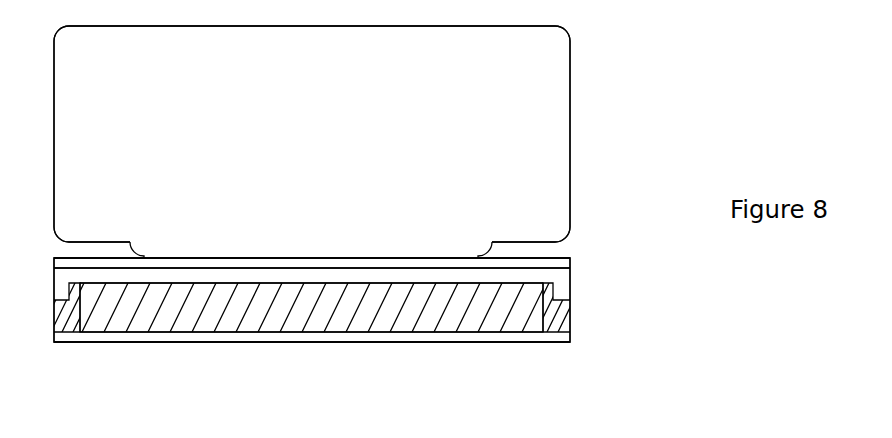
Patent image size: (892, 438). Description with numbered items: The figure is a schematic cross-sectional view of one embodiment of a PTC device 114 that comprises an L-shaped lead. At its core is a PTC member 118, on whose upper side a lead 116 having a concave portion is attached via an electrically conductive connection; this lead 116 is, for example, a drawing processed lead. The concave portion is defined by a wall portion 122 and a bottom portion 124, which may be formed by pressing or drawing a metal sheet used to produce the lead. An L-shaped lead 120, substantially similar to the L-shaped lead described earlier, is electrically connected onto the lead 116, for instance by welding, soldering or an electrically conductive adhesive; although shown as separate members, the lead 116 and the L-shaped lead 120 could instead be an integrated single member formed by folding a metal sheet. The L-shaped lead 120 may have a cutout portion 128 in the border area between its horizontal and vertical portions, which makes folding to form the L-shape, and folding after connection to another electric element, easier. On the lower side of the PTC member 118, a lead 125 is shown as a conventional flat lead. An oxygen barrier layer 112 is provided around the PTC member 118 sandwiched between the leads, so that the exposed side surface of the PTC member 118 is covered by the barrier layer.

The PTC device 114 is at (608, 89).
The L-shaped lead 120 is at (550, 180).
The cutout portion 128 is at (105, 250).
The oxygen barrier layer 112 is at (565, 321).
The bottom portion 124 is at (212, 277).
The lead having a concave portion 116 is at (538, 277).
The PTC member 118 is at (490, 316).
The wall portion 122 is at (560, 292).
The lead 125 is at (320, 335).